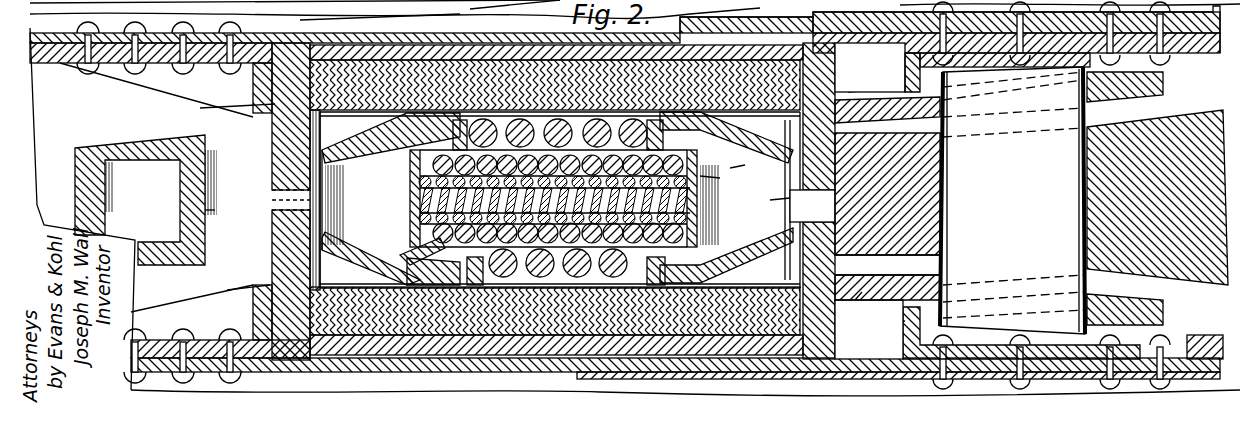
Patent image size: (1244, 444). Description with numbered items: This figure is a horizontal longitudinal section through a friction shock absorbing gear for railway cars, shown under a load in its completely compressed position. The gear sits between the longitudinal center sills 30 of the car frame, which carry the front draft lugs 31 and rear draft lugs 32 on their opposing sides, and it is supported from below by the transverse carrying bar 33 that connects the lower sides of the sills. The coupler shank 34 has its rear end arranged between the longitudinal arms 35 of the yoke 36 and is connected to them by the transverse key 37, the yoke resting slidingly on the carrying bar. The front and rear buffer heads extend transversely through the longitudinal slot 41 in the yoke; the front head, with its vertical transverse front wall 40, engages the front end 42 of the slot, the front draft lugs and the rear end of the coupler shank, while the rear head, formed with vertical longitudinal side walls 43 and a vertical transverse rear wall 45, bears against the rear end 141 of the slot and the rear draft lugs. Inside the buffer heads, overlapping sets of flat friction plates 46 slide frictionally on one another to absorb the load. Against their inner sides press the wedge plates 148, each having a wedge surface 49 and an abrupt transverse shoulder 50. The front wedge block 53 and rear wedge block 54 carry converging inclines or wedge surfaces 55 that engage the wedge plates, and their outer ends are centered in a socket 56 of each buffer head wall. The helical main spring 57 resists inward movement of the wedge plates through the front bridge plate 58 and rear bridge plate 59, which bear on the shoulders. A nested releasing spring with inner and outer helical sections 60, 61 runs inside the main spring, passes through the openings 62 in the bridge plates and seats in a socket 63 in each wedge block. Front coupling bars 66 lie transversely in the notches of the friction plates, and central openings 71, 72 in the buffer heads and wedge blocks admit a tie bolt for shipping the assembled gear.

The longitudinal center sills 30 is at (626, 197).
The front draft lugs 31 is at (905, 62).
The rear draft lugs 32 is at (262, 90).
The transverse carrying bar 33 is at (383, 10).
The coupler shank 34 is at (1090, 232).
The longitudinal arms 35 is at (1120, 95).
The yoke 36 is at (85, 152).
The transverse key 37 is at (1012, 200).
The vertical transverse front wall 40 is at (870, 67).
The longitudinal slot 41 is at (223, 178).
The front end of slot 42 is at (845, 295).
The vertical longitudinal side walls 43 is at (355, 48).
The vertical transverse rear wall 45 is at (280, 124).
The friction plates 46 is at (488, 72).
The wedge surface 49 is at (430, 130).
The abrupt transverse shoulder 50 is at (460, 128).
The front wedge block 53 is at (745, 260).
The rear wedge block 54 is at (358, 250).
The inclines or wedge surfaces 55 is at (420, 140).
The socket 56 is at (290, 255).
The main spring 57 is at (415, 250).
The front bridge plate 58 is at (700, 205).
The rear bridge plate 59 is at (440, 170).
The inner helical section of releasing spring 60 is at (720, 181).
The outer helical section of releasing spring 61 is at (746, 167).
The openings in bridge plates 62 is at (440, 290).
The socket in wedge block 63 is at (410, 247).
The front coupling bars 66 is at (850, 140).
The openings in buffer heads 71 is at (812, 206).
The openings in wedge blocks 72 is at (771, 200).
The rear end of slot 141 is at (205, 210).
The wedge plates 148 is at (545, 208).